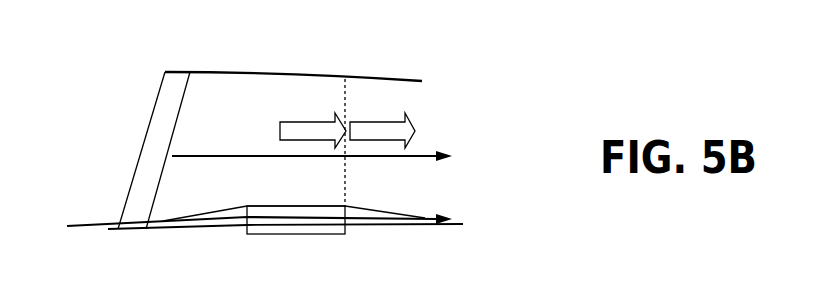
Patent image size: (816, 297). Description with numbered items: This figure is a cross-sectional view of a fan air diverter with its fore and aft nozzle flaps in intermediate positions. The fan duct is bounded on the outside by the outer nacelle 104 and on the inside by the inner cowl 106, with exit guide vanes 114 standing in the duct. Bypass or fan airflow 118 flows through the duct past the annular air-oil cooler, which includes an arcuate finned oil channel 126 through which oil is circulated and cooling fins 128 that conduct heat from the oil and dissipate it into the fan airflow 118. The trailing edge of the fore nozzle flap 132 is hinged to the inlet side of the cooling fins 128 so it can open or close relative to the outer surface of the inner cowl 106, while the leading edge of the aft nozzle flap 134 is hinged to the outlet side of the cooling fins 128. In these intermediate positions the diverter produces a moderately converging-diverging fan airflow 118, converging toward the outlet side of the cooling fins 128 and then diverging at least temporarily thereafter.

The outer nacelle 104 is at (400, 80).
The inner cowl 106 is at (440, 226).
The exit guide vanes 114 is at (160, 85).
The fan airflow 118 is at (241, 228).
The finned oil channel 126 is at (320, 234).
The cooling fins 128 is at (259, 206).
The fore nozzle flap 132 is at (197, 210).
The aft nozzle flap 134 is at (377, 208).